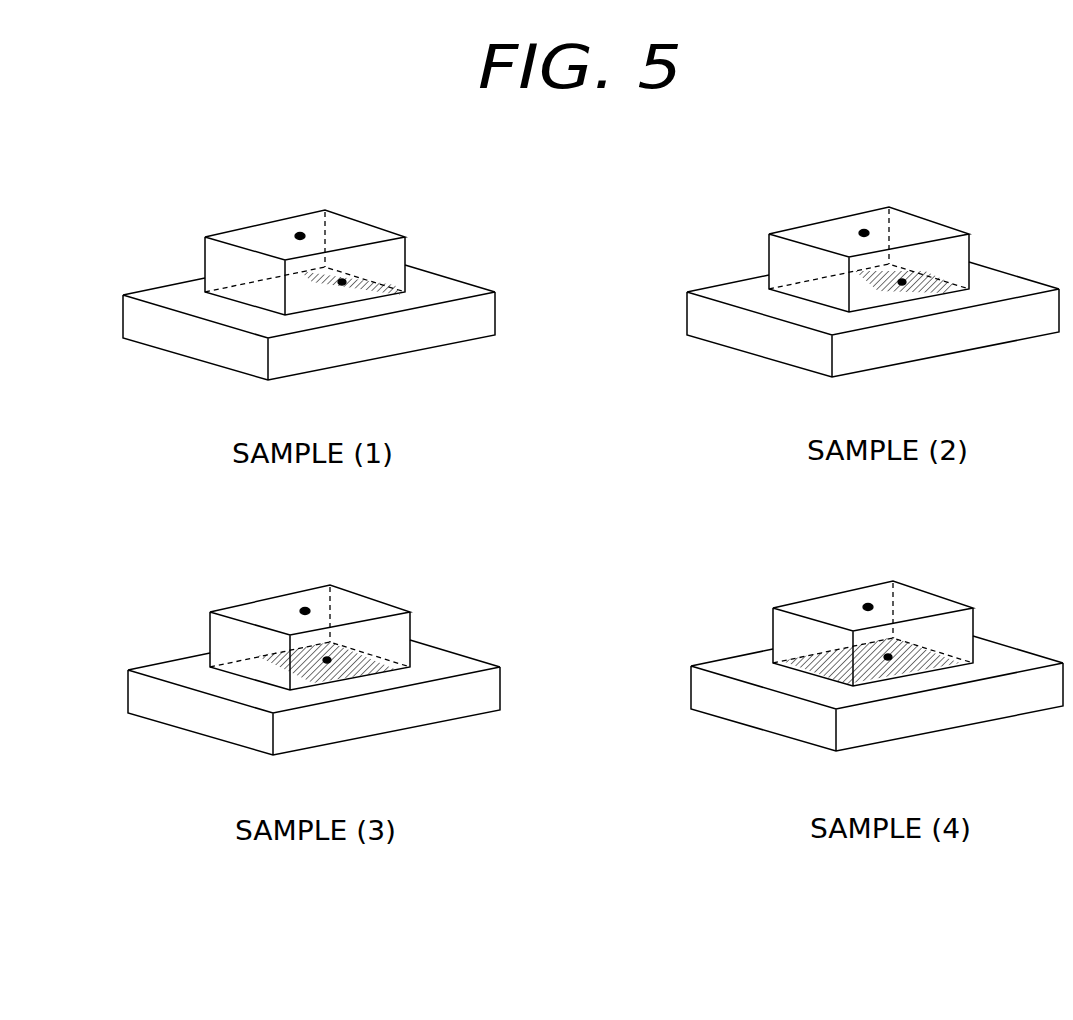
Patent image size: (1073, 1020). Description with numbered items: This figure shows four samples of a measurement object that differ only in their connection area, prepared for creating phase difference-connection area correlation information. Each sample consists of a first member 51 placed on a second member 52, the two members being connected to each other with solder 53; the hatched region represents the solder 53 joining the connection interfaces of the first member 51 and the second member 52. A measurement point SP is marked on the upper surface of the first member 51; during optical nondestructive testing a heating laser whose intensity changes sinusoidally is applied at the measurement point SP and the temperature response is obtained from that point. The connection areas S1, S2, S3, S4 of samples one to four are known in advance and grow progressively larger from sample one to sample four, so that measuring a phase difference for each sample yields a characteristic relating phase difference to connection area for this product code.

The first member 51 is at (368, 215).
The second member 52 is at (447, 276).
The solder 53 is at (392, 302).
The connection area S1 is at (373, 307).
The connection area S2 is at (933, 348).
The connection area S3 is at (358, 727).
The connection area S4 is at (918, 725).
The measurement point SP is at (325, 177).